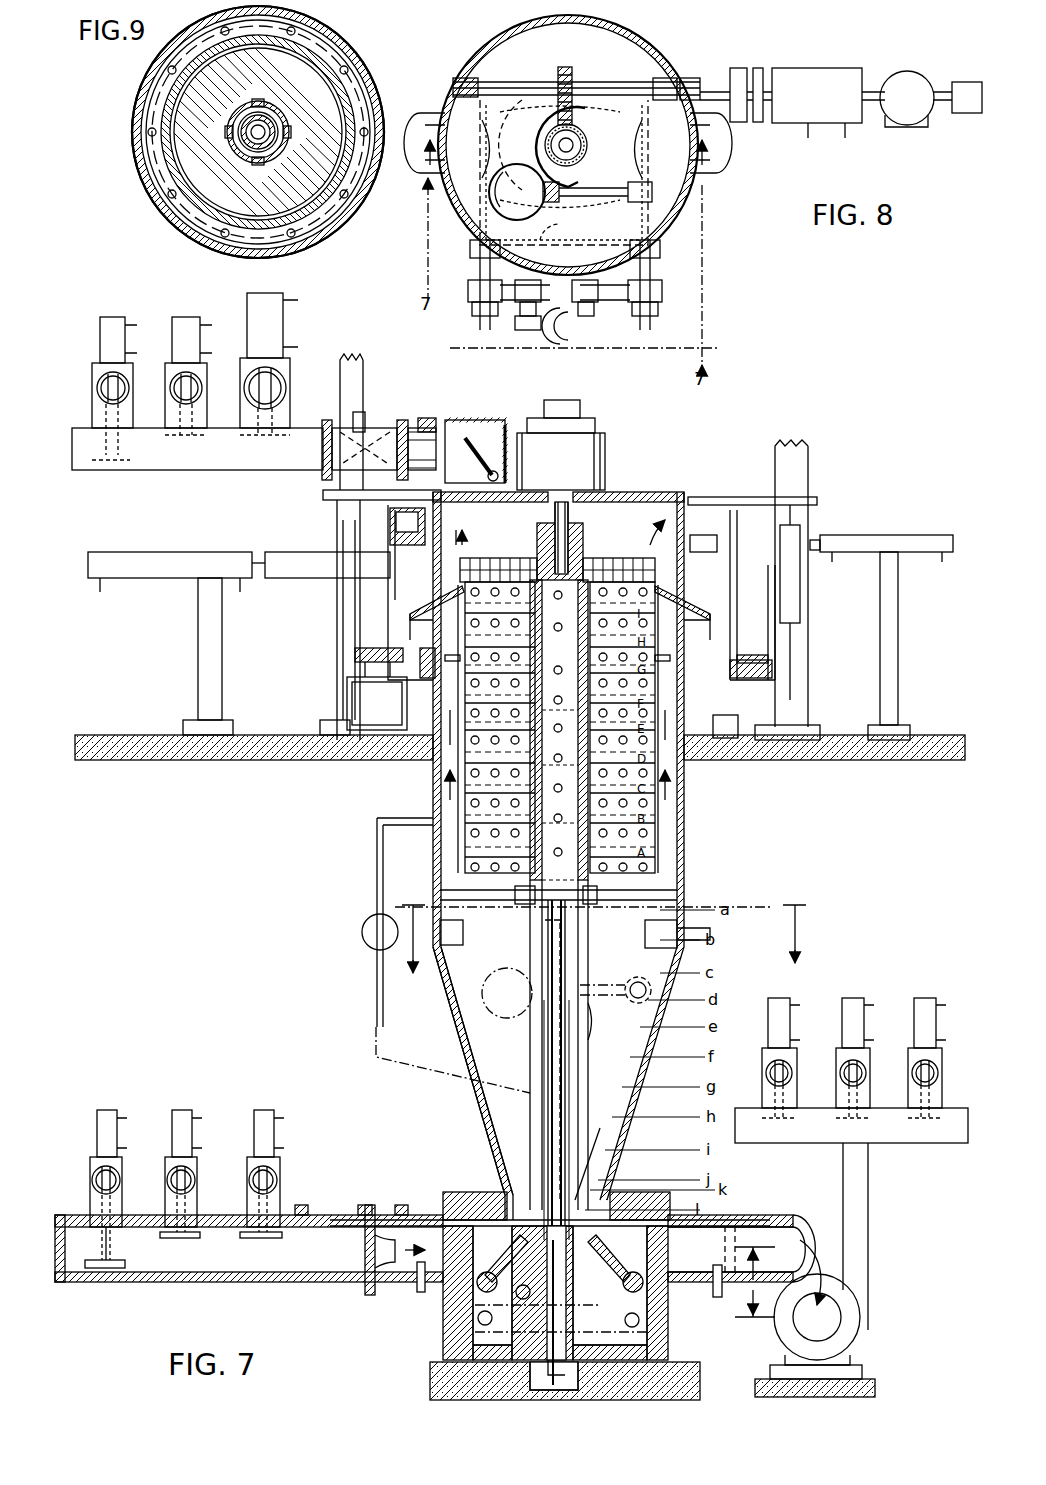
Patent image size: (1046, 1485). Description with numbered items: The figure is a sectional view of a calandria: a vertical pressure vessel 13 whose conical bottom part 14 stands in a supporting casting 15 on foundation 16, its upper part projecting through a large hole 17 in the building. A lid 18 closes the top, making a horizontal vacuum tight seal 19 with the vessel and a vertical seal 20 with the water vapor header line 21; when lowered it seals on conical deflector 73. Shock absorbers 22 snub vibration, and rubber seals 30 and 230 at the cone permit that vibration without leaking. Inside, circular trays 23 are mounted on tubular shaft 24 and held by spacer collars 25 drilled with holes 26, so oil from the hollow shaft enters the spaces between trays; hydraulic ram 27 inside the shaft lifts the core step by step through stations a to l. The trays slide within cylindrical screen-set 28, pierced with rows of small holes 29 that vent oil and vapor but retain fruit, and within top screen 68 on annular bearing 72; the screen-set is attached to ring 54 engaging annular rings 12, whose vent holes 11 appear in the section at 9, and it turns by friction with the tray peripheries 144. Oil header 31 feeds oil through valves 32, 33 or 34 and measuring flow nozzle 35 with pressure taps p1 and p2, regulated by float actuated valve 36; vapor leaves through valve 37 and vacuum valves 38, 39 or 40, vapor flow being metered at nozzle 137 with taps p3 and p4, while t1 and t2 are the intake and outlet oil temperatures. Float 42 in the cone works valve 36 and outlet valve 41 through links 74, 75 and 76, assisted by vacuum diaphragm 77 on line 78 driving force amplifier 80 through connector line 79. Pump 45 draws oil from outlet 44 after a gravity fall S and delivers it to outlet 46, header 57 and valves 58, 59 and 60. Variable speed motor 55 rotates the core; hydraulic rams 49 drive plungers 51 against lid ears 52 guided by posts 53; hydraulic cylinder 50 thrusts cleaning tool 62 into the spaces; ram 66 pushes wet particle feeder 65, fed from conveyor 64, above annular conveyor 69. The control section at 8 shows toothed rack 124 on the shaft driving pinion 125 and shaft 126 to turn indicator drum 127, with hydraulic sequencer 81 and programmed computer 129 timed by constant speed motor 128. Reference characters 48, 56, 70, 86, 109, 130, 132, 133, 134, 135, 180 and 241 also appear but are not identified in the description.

In FIG. 9, the vent holes 11 is at (352, 200).
In FIG. 9, the annular rings 12 is at (356, 62).
In FIG. 7, the annular rings 12 is at (560, 727).
In FIG. 9, the vertical pressure vessel 13 is at (140, 90).
In FIG. 8, the vertical pressure vessel 13 is at (650, 38).
In FIG. 7, the vertical pressure vessel 13 is at (690, 858).
In FIG. 7, the conical bottom part 14 is at (475, 1095).
In FIG. 8, the supporting casting 15 is at (585, 206).
In FIG. 7, the supporting casting 15 is at (435, 1192).
In FIG. 7, the foundation 16 is at (700, 1375).
In FIG. 7, the large hole 17 is at (418, 765).
In FIG. 7, the lid 18 is at (672, 470).
In FIG. 7, the horizontal vacuum tight seal 19 is at (684, 598).
In FIG. 7, the vertical seal 20 is at (402, 424).
In FIG. 7, the water vapor header line 21 is at (190, 462).
In FIG. 7, the shock absorbers 22 is at (330, 718).
In FIG. 7, the circular trays 23 is at (515, 755).
In FIG. 9, the tubular shaft 24 is at (282, 130).
In FIG. 8, the tubular shaft 24 is at (556, 147).
In FIG. 7, the tubular shaft 24 is at (592, 752).
In FIG. 9, the spacer collars 25 is at (290, 110).
In FIG. 7, the spacer collars 25 is at (586, 812).
In FIG. 9, the holes 26 is at (240, 150).
In FIG. 7, the holes 26 is at (560, 735).
In FIG. 9, the hydraulic ram 27 is at (240, 160).
In FIG. 8, the hydraulic ram 27 is at (554, 144).
In FIG. 7, the hydraulic ram 27 is at (528, 1035).
In FIG. 9, the cylindrical screen-set 28 is at (308, 62).
In FIG. 7, the cylindrical screen-set 28 is at (672, 820).
In FIG. 9, the small holes 29 is at (232, 198).
In FIG. 7, the small holes 29 is at (515, 790).
In FIG. 7, the rubber seal 30 is at (492, 1192).
In FIG. 8, the oil conducting header 31 is at (428, 84).
In FIG. 7, the oil conducting header 31 is at (165, 1285).
In FIG. 7, the valve 32 is at (82, 1180).
In FIG. 7, the valve 33 is at (160, 1180).
In FIG. 7, the valve 34 is at (240, 1180).
In FIG. 7, the measuring flow nozzle 35 is at (365, 1250).
In FIG. 8, the float actuated valve 36 is at (474, 149).
In FIG. 7, the float actuated valve 36 is at (488, 1258).
In FIG. 7, the valve 37 is at (500, 418).
In FIG. 7, the vacuum valve 38 is at (98, 388).
In FIG. 7, the vacuum valve 39 is at (168, 388).
In FIG. 7, the vacuum valve 40 is at (242, 388).
In FIG. 8, the oil exit valve 41 is at (655, 149).
In FIG. 7, the oil exit valve 41 is at (640, 1250).
In FIG. 8, the float 42 is at (500, 200).
In FIG. 7, the float 42 is at (490, 995).
In FIG. 8, the outlet 44 is at (720, 165).
In FIG. 7, the outlet 44 is at (800, 1235).
In FIG. 7, the suction pump 45 is at (860, 1322).
In FIG. 7, the outlet 46 is at (868, 1245).
In FIG. 7, the annular chamber 48 is at (410, 580).
In FIG. 7, the hydraulic rams 49 is at (335, 520).
In FIG. 7, the hydraulic cylinder 50 is at (870, 535).
In FIG. 7, the plungers 51 is at (820, 532).
In FIG. 7, the lid ears 52 is at (322, 492).
In FIG. 7, the guide posts 53 is at (363, 380).
In FIG. 9, the ring 54 is at (350, 40).
In FIG. 7, the ring 54 is at (470, 664).
In FIG. 7, the variable speed motor 55 is at (606, 450).
In FIG. 7, the bottom ring 56 is at (448, 880).
In FIG. 7, the header 57 is at (895, 1142).
In FIG. 7, the valve 58 is at (798, 1072).
In FIG. 7, the valve 59 is at (870, 1072).
In FIG. 7, the valve 60 is at (942, 1072).
In FIG. 7, the cleaning tool 62 is at (705, 535).
In FIG. 7, the wet particle conveyor 64 is at (407, 526).
In FIG. 7, the wet particle feeder 65 is at (312, 540).
In FIG. 7, the hydraulic ram cylinder 66 is at (140, 550).
In FIG. 7, the cylindrical top screen 68 is at (470, 562).
In FIG. 7, the annular conveyor 69 is at (365, 648).
In FIG. 7, the motor 70 is at (352, 694).
In FIG. 7, the annular bearing 72 is at (520, 540).
In FIG. 7, the conical deflector 73 is at (436, 585).
In FIG. 8, the link 74 is at (628, 320).
In FIG. 7, the link 74 is at (662, 968).
In FIG. 8, the link 75 is at (510, 330).
In FIG. 7, the link 75 is at (592, 1012).
In FIG. 8, the link 76 is at (560, 228).
In FIG. 7, the link 76 is at (450, 1355).
In FIG. 7, the vacuum diaphragm 77 is at (360, 940).
In FIG. 7, the vacuum line 78 is at (372, 835).
In FIG. 7, the connector line 79 is at (372, 995).
In FIG. 8, the force amplifier 80 is at (570, 350).
In FIG. 8, the hydraulic sequencer 81 is at (815, 68).
In FIG. 7, the plate 86 is at (755, 655).
In FIG. 7, the control box 109 is at (478, 418).
In FIG. 8, the toothed rack 124 is at (554, 130).
In FIG. 7, the toothed rack 124 is at (570, 920).
In FIG. 8, the pinion 125 is at (568, 66).
In FIG. 7, the pinion 125 is at (545, 916).
In FIG. 8, the shaft 126 is at (587, 90).
In FIG. 7, the shaft 126 is at (586, 948).
In FIG. 8, the indicator drum 127 is at (742, 66).
In FIG. 8, the constant speed motor 128 is at (905, 62).
In FIG. 8, the programmed computer 129 is at (965, 113).
In FIG. 8, the disc 130 is at (758, 122).
In FIG. 7, the bore 132 is at (570, 555).
In FIG. 7, the bolt 133 is at (560, 1288).
In FIG. 7, the bearing 134 is at (592, 1380).
In FIG. 7, the shaft end 135 is at (535, 1380).
In FIG. 7, the nozzle 137 is at (353, 428).
In FIG. 9, the tray peripheries 144 is at (208, 150).
In FIG. 7, the tray peripheries 144 is at (470, 700).
In FIG. 7, the rod 180 is at (586, 1130).
In FIG. 7, the rubber seal 230 is at (500, 1190).
In FIG. 7, the passage 241 is at (570, 527).
In FIG. 7, the section line 8— 8 is at (604, 955).
In FIG. 7, the section line 9— 9 is at (452, 672).
In FIG. 7, the pressure tap p1 is at (318, 1205).
In FIG. 7, the pressure tap p2 is at (400, 1203).
In FIG. 7, the pressure tap p3 is at (436, 416).
In FIG. 7, the pressure tap p4 is at (357, 412).
In FIG. 7, the intake oil temperature t1 is at (415, 1286).
In FIG. 7, the outlet oil temperature t2 is at (712, 1294).
In FIG. 7, the distance S is at (755, 1282).